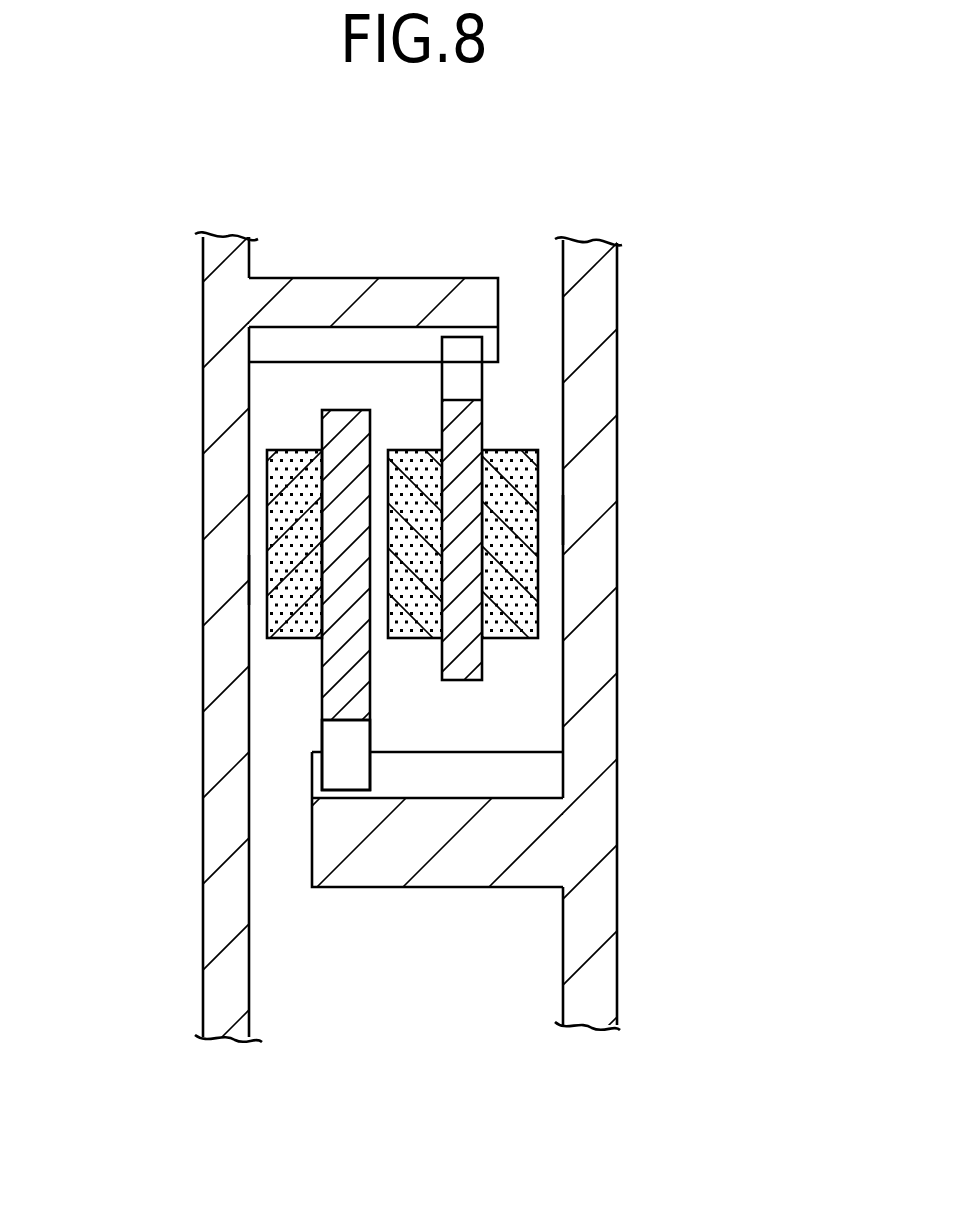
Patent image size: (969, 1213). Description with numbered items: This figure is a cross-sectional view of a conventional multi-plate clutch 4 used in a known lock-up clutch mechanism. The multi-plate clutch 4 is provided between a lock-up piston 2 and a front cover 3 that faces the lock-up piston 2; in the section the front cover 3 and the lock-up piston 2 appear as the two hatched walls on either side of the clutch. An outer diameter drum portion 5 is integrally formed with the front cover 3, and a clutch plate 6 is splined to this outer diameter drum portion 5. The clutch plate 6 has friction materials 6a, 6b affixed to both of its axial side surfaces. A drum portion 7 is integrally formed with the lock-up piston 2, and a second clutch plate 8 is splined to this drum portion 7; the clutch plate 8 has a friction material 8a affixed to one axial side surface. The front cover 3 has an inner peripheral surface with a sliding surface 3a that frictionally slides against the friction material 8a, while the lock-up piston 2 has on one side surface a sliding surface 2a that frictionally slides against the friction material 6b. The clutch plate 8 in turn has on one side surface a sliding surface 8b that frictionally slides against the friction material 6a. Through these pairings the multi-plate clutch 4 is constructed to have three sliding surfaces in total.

The lock-up piston 2 is at (597, 603).
The sliding surface 2a is at (565, 506).
The front cover 3 is at (225, 308).
The sliding surface 3a is at (248, 560).
The multi-plate clutch 4 is at (413, 672).
The outer diameter drum portion 5 is at (375, 305).
The clutch plate 6 is at (512, 421).
The friction material 6a is at (410, 498).
The friction material 6b is at (522, 482).
The drum portion 7 is at (448, 865).
The clutch plate 8 is at (392, 412).
The friction material 8a is at (272, 620).
The sliding surface 8b is at (330, 660).